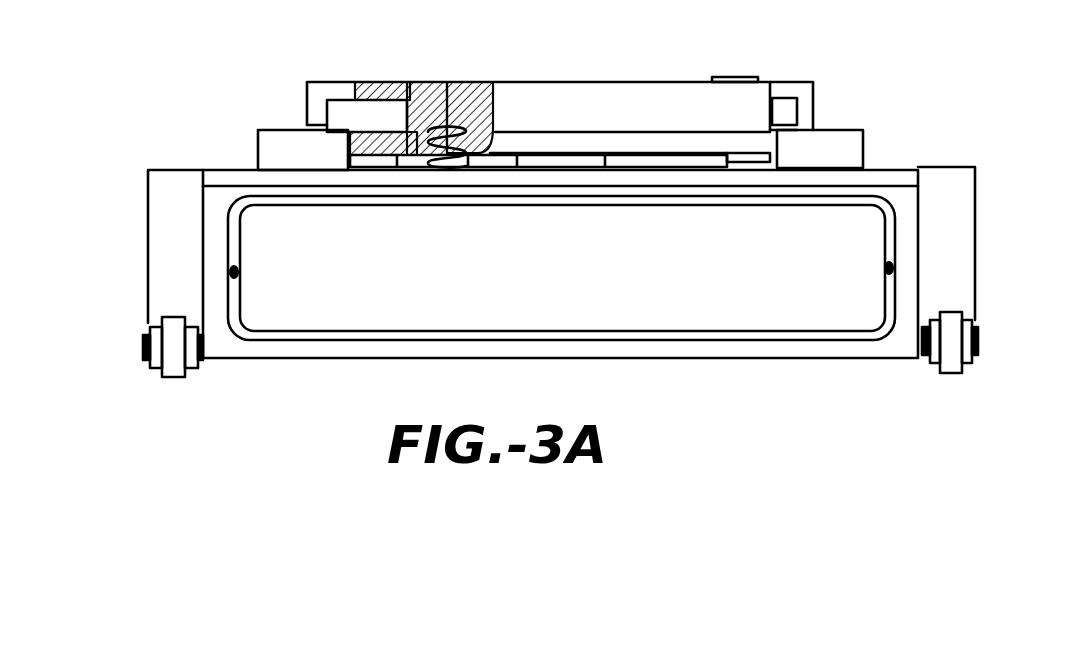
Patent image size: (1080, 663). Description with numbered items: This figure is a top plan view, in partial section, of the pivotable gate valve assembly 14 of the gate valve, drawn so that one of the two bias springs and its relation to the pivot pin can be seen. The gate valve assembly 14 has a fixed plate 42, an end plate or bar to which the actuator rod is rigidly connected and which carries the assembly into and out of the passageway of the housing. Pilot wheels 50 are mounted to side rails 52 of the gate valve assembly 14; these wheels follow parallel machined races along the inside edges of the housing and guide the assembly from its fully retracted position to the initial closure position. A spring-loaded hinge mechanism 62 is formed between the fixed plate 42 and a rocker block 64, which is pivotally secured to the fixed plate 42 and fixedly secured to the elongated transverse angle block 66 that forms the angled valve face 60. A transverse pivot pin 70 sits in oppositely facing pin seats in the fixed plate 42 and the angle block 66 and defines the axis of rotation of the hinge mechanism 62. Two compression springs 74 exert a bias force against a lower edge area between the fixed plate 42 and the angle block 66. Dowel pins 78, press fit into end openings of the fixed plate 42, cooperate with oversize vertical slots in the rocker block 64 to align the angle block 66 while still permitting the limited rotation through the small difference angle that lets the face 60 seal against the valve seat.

The gate valve assembly 14 is at (328, 430).
The fixed plate 42 is at (617, 102).
The pilot wheels 50 is at (171, 366).
The side rails 52 is at (172, 250).
The angled valve face 60 is at (898, 202).
The spring-loaded hinge mechanism 62 is at (605, 98).
The rocker block 64 is at (843, 138).
The angle block 66 is at (233, 168).
The pivot pin 70 is at (562, 158).
The compression springs 74 is at (448, 126).
The dowel pins 78 is at (362, 117).